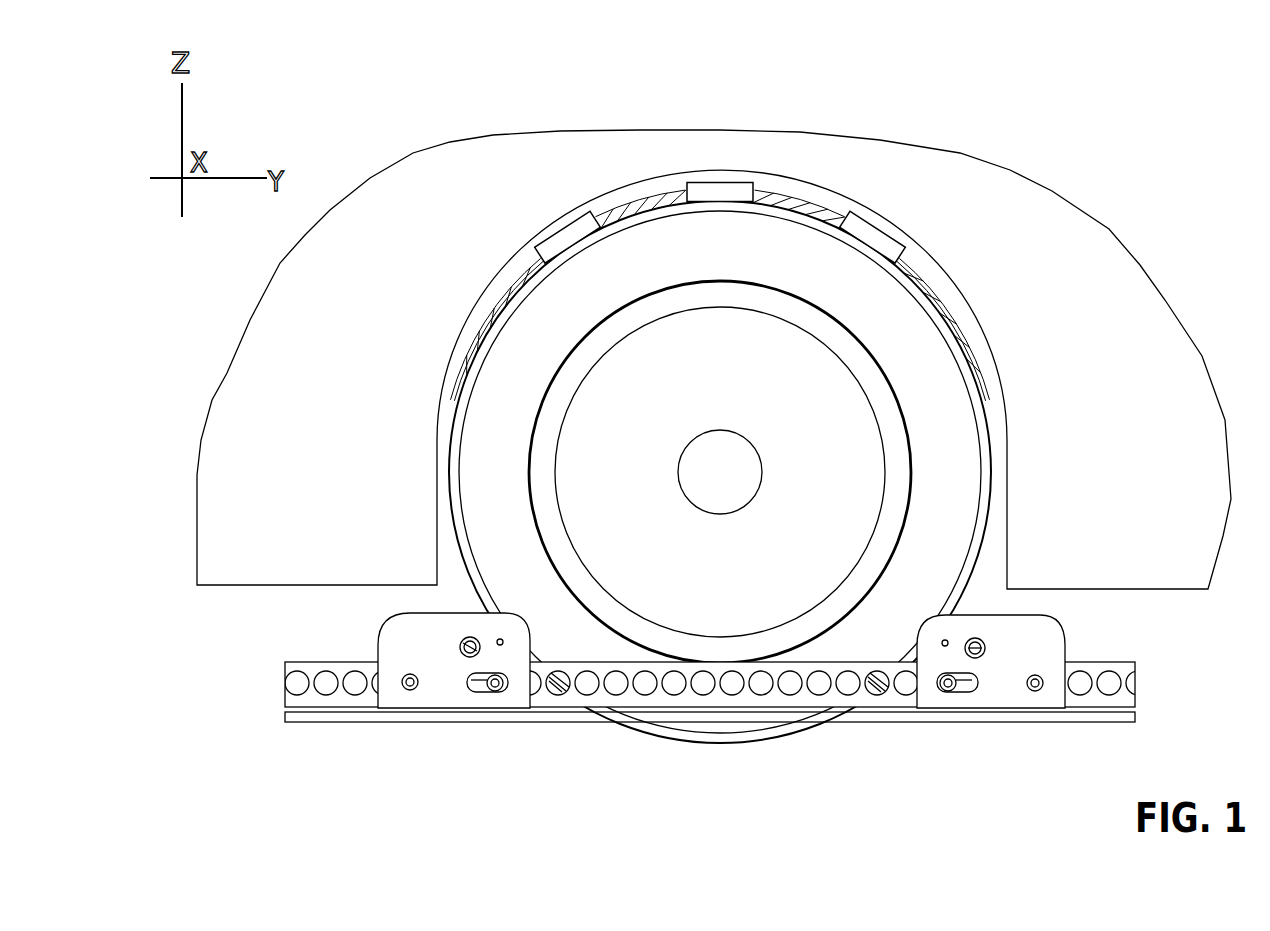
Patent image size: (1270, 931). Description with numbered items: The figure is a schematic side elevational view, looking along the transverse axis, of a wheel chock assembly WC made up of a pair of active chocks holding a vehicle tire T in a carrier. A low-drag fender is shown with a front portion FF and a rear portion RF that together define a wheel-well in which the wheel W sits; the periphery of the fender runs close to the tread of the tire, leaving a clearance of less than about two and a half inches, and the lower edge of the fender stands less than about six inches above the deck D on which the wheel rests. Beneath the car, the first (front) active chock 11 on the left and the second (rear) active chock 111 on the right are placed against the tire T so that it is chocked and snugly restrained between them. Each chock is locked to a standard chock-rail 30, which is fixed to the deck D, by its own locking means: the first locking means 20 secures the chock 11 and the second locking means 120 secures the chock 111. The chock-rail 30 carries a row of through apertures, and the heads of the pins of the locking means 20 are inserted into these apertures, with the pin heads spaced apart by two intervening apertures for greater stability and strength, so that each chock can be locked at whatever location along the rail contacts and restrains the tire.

The first active chock 11 is at (405, 638).
The second active chock 111 is at (1040, 645).
The first locking means 20 is at (407, 690).
The second locking means 120 is at (1040, 692).
The chock-rail 30 is at (337, 697).
The wheel chock assembly WC is at (435, 704).
The deck D is at (688, 785).
The tire T is at (527, 373).
The wheel W is at (810, 442).
The front fender portion FF is at (340, 452).
The rear fender portion RF is at (1127, 452).